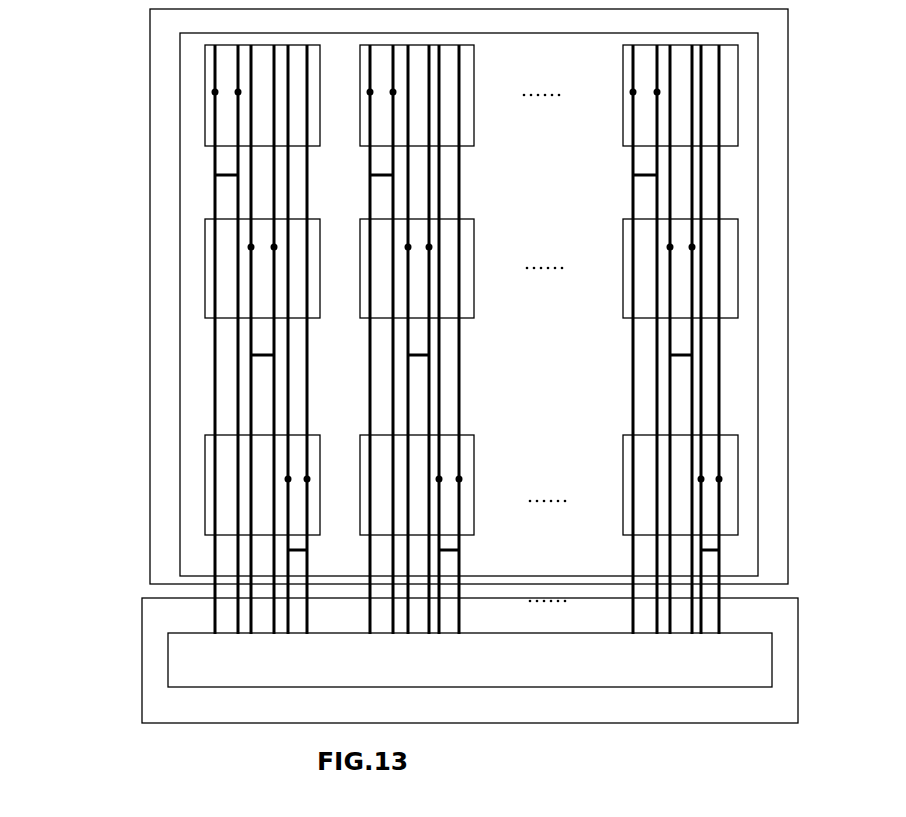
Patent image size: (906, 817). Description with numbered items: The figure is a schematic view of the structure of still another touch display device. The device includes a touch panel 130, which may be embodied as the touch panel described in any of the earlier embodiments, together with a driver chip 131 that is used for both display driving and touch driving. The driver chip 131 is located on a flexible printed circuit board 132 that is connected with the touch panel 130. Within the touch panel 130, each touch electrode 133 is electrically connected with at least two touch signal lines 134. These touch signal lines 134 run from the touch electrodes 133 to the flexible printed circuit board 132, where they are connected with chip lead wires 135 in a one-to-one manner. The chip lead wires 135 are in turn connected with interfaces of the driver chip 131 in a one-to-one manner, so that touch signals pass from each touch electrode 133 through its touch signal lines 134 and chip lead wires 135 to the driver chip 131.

The touch panel 130 is at (411, 296).
The driver chip 131 is at (398, 647).
The flexible printed circuit board 132 is at (411, 660).
The touch electrode 133 is at (386, 291).
The touch signal line 134 is at (377, 362).
The chip lead wire 135 is at (374, 339).